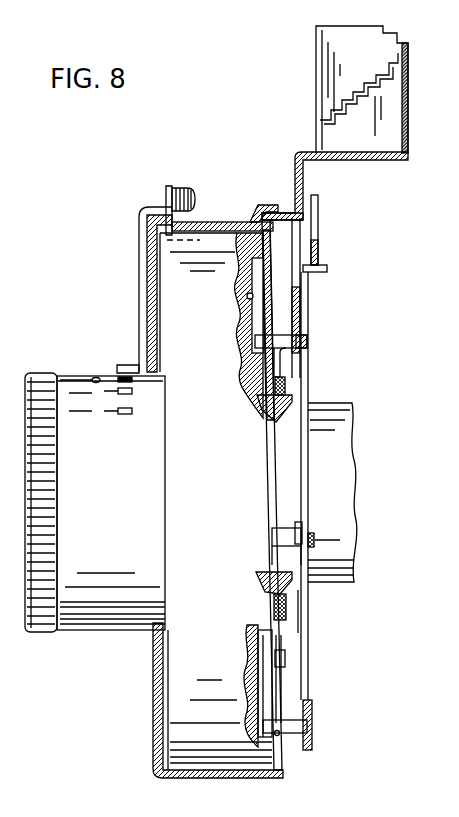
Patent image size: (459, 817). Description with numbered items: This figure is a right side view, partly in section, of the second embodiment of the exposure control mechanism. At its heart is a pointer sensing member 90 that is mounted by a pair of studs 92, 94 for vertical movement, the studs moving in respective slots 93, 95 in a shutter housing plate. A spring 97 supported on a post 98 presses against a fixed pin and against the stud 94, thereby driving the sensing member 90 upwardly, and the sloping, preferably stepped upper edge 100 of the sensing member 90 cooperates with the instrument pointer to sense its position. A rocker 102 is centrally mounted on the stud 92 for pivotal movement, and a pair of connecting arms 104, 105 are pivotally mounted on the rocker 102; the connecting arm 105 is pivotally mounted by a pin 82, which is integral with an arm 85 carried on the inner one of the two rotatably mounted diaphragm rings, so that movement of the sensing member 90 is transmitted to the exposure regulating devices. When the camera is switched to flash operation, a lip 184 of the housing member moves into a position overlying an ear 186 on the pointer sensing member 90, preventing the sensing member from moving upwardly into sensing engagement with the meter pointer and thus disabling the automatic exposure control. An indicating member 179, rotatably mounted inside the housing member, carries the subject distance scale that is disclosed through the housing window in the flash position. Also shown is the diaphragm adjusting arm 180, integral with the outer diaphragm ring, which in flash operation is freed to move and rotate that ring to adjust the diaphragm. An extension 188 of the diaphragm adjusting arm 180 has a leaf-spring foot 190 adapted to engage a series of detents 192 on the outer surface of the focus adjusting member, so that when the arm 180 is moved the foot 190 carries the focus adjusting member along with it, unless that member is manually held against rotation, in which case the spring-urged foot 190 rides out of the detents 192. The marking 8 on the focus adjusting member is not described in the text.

The indicia 8 is at (96, 404).
The pin 82 is at (280, 536).
The arm 85 is at (304, 602).
The pointer sensing member 90 is at (303, 183).
The stud 92 is at (282, 348).
The slot 93 is at (244, 298).
The stud 94 is at (297, 736).
The slot 95 is at (246, 648).
The spring 97 is at (282, 692).
The post 98 is at (288, 660).
The stepped upper edge 100 is at (348, 100).
The rocker 102 is at (299, 308).
The connecting arm 104 is at (308, 376).
The connecting arm 105 is at (322, 432).
The indicating member 179 is at (212, 222).
The diaphragm adjusting arm 180 is at (182, 186).
The lip 184 is at (261, 206).
The ear 186 is at (290, 214).
The extension 188 is at (140, 272).
The leaf-spring foot 190 is at (129, 365).
The detents 192 is at (133, 409).